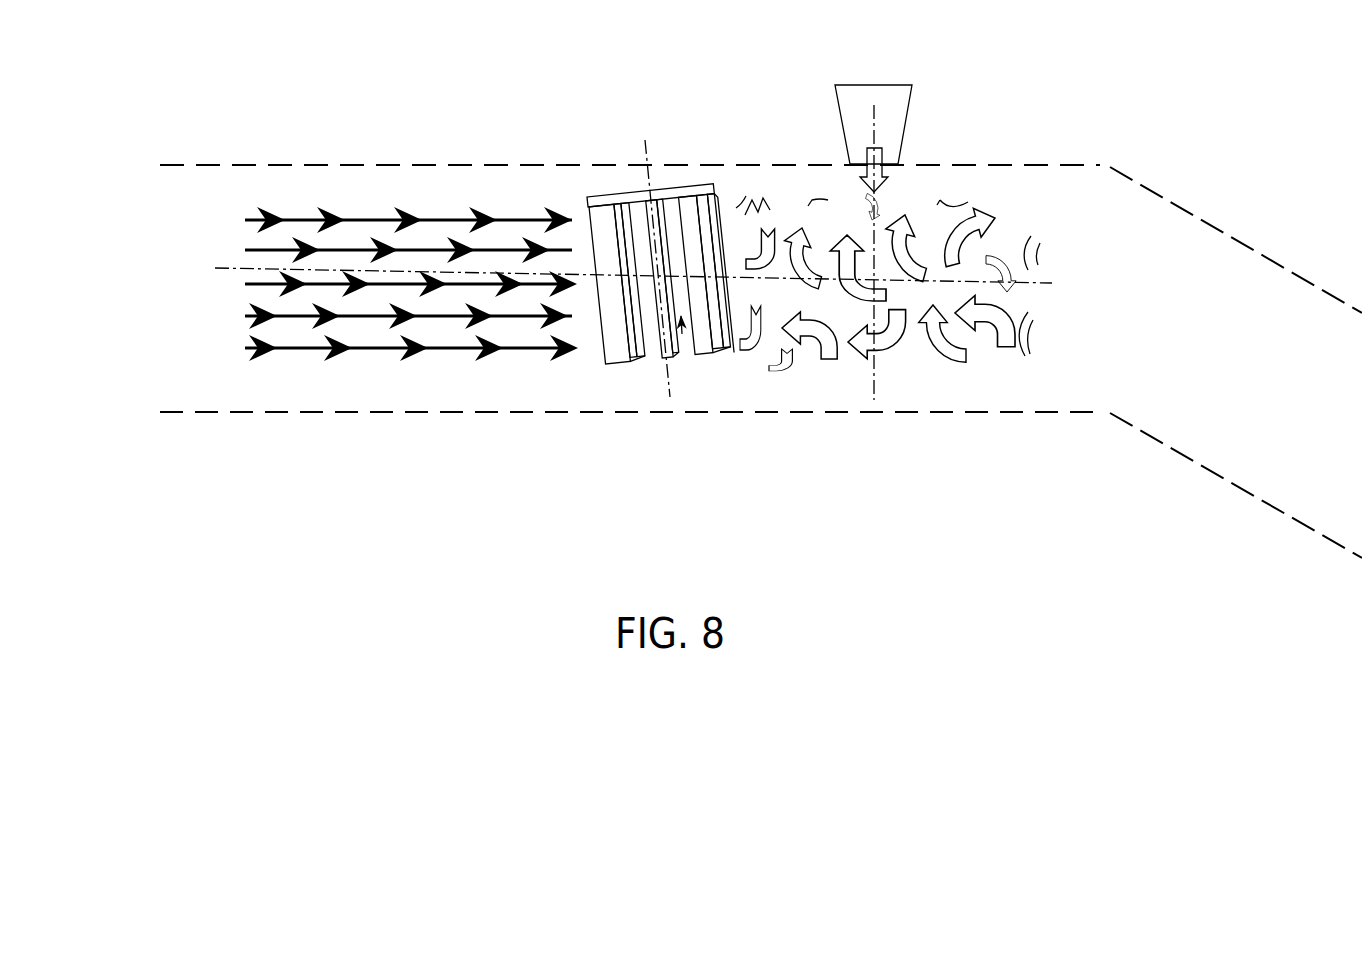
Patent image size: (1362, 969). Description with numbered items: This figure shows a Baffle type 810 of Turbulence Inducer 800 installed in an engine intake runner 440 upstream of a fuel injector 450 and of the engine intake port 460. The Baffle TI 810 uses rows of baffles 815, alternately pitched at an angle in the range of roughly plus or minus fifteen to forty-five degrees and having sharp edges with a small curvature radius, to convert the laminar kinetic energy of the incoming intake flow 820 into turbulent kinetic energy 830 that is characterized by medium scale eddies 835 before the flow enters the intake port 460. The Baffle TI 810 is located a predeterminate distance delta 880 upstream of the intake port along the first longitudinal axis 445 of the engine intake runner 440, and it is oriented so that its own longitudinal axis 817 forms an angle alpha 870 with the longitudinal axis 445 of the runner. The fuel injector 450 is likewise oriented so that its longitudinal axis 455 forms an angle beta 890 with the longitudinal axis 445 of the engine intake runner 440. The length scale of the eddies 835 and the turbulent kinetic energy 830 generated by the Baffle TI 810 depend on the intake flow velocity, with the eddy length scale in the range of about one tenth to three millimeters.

The Turbulence Inducer 800 is at (421, 81).
The engine intake runner 440 is at (168, 298).
The longitudinal axis of the engine intake runner 445 is at (1043, 256).
The fuel injector 450 is at (890, 73).
The longitudinal axis of the fuel injector 455 is at (871, 405).
The engine intake port 460 is at (1221, 355).
The Baffle type turbulence inducer 810 is at (660, 284).
The baffles 815 is at (652, 370).
The longitudinal axis of the Baffle TI 817 is at (643, 160).
The incoming intake flow 820 is at (356, 336).
The turbulent kinetic energy 830 is at (919, 394).
The medium scale eddies 835 is at (833, 350).
The angle (α) 870 is at (687, 356).
The predeterminate distance (δ) 880 is at (732, 251).
The angle (β) 890 is at (892, 318).